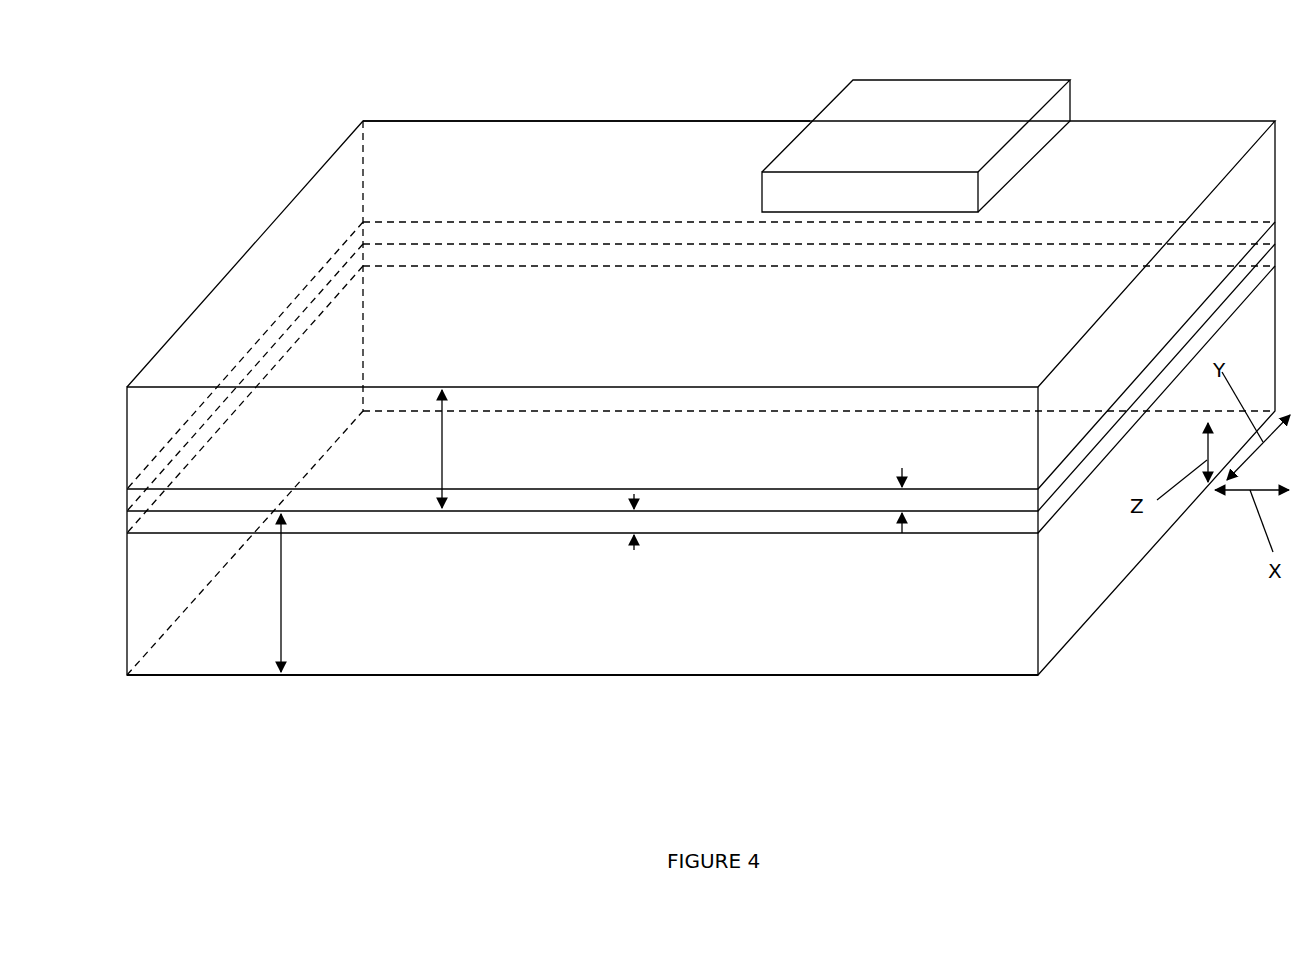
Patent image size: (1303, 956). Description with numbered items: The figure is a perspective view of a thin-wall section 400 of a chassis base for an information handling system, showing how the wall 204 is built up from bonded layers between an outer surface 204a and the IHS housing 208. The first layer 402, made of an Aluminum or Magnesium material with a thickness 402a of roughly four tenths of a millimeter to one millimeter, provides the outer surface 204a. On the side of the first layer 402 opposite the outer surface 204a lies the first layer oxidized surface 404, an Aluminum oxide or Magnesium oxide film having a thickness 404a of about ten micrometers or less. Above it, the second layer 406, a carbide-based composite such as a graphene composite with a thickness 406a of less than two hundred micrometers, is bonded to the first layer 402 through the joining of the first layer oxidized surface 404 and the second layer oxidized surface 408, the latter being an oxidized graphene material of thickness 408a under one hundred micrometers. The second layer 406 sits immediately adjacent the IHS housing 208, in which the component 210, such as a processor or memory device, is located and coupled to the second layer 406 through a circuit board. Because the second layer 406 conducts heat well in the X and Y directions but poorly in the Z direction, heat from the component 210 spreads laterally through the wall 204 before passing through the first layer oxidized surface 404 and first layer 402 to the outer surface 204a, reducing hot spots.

The thin-wall section 400 is at (263, 145).
The IHS housing 208 is at (623, 72).
The component 210 is at (912, 122).
The wall 204 is at (117, 675).
The outer surface 204a is at (654, 677).
The first layer 402 is at (1040, 515).
The thickness of first layer 402a is at (282, 593).
The first layer oxidized surface 404 is at (548, 522).
The thickness of first layer oxidized surface 404a is at (634, 545).
The second layer 406 is at (1040, 388).
The thickness of second layer 406a is at (442, 468).
The second layer oxidized surface 408 is at (840, 502).
The thickness of second layer oxidized surface 408a is at (902, 528).